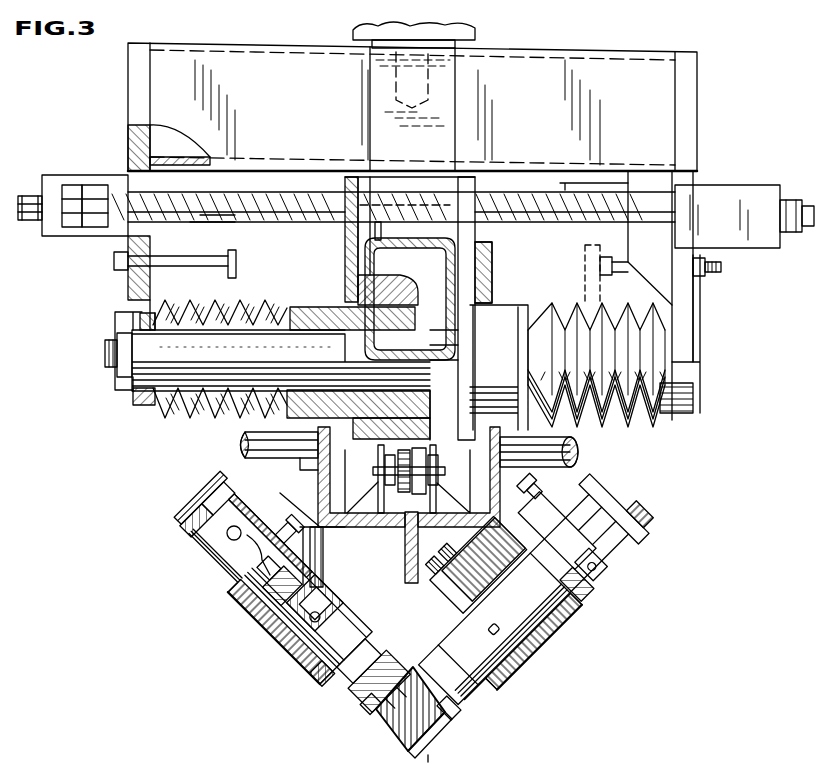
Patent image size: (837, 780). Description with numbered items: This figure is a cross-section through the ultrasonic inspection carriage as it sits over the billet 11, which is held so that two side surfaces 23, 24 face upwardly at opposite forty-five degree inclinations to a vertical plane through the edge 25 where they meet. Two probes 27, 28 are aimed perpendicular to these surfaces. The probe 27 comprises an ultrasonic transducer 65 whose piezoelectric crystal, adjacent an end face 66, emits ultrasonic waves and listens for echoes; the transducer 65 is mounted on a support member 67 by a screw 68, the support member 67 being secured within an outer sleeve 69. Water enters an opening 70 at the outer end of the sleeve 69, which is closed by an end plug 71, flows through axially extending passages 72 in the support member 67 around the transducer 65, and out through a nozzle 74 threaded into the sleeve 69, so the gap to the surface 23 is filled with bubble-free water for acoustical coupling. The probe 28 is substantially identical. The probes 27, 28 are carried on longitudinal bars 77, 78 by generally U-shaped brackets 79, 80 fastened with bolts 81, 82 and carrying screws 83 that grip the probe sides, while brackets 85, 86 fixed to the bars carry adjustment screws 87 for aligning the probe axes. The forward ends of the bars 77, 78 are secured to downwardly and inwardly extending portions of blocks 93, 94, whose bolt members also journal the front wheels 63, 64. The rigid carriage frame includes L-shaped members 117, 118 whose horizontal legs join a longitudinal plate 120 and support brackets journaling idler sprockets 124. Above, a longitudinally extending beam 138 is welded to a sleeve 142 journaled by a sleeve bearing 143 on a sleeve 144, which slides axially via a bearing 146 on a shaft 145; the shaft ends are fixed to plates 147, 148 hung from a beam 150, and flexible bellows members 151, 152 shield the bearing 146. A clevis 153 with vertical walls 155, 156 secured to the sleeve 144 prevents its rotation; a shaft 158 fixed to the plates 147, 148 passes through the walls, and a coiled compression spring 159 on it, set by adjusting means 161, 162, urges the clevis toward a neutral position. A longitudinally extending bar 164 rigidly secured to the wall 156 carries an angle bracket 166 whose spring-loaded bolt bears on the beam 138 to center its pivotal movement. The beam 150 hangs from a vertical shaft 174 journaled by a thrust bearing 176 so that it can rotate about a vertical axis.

The billet 11 is at (428, 748).
The side surface 23 is at (375, 707).
The side surface 24 is at (452, 702).
The edge 25 is at (363, 703).
The probe 27 is at (337, 660).
The probe 28 is at (482, 690).
The front wheel 63 is at (383, 742).
The front wheel 64 is at (440, 727).
The ultrasonic transducer 65 is at (322, 637).
The end face 66 is at (320, 670).
The support member 67 is at (280, 587).
The screw 68 is at (270, 567).
The outer sleeve 69 is at (213, 553).
The opening 70 is at (227, 533).
The end plug 71 is at (200, 503).
The axially extending passages 72 is at (300, 610).
The nozzle 74 is at (363, 680).
The bar 77 is at (300, 463).
The bar 78 is at (480, 550).
The U-shaped bracket 79 is at (333, 593).
The U-shaped bracket 80 is at (478, 615).
The bolt 81 is at (388, 573).
The bolt 82 is at (406, 578).
The screws 83 is at (530, 643).
The bracket 85 is at (307, 530).
The bracket 86 is at (573, 587).
The adjustment screw 87 is at (598, 572).
The block 93 is at (247, 437).
The block 94 is at (570, 447).
The L-shaped member 117 is at (330, 468).
The L-shaped member 118 is at (500, 461).
The longitudinally extending plate 120 is at (410, 588).
The idler sprocket 124 is at (413, 450).
The longitudinally extending beam 138 is at (447, 236).
The sleeve 142 is at (432, 290).
The sleeve bearing 143 is at (365, 300).
The sleeve 144 is at (292, 302).
The shaft 145 is at (186, 355).
The bearing 146 is at (340, 330).
The plate 147 is at (135, 290).
The plate 148 is at (682, 305).
The beam 150 is at (555, 50).
The bellows member 151 is at (183, 413).
The bellows member 152 is at (640, 425).
The clevis 153 is at (340, 244).
The vertical wall 155 is at (345, 256).
The vertical wall 156 is at (475, 262).
The shaft 158 is at (286, 200).
The coiled compression spring 159 is at (216, 226).
The adjusting means 161 is at (90, 160).
The adjusting means 162 is at (737, 185).
The longitudinally extending bar 164 is at (488, 292).
The angle bracket 166 is at (562, 238).
The vertical shaft 174 is at (378, 68).
The thrust bearing 176 is at (482, 31).